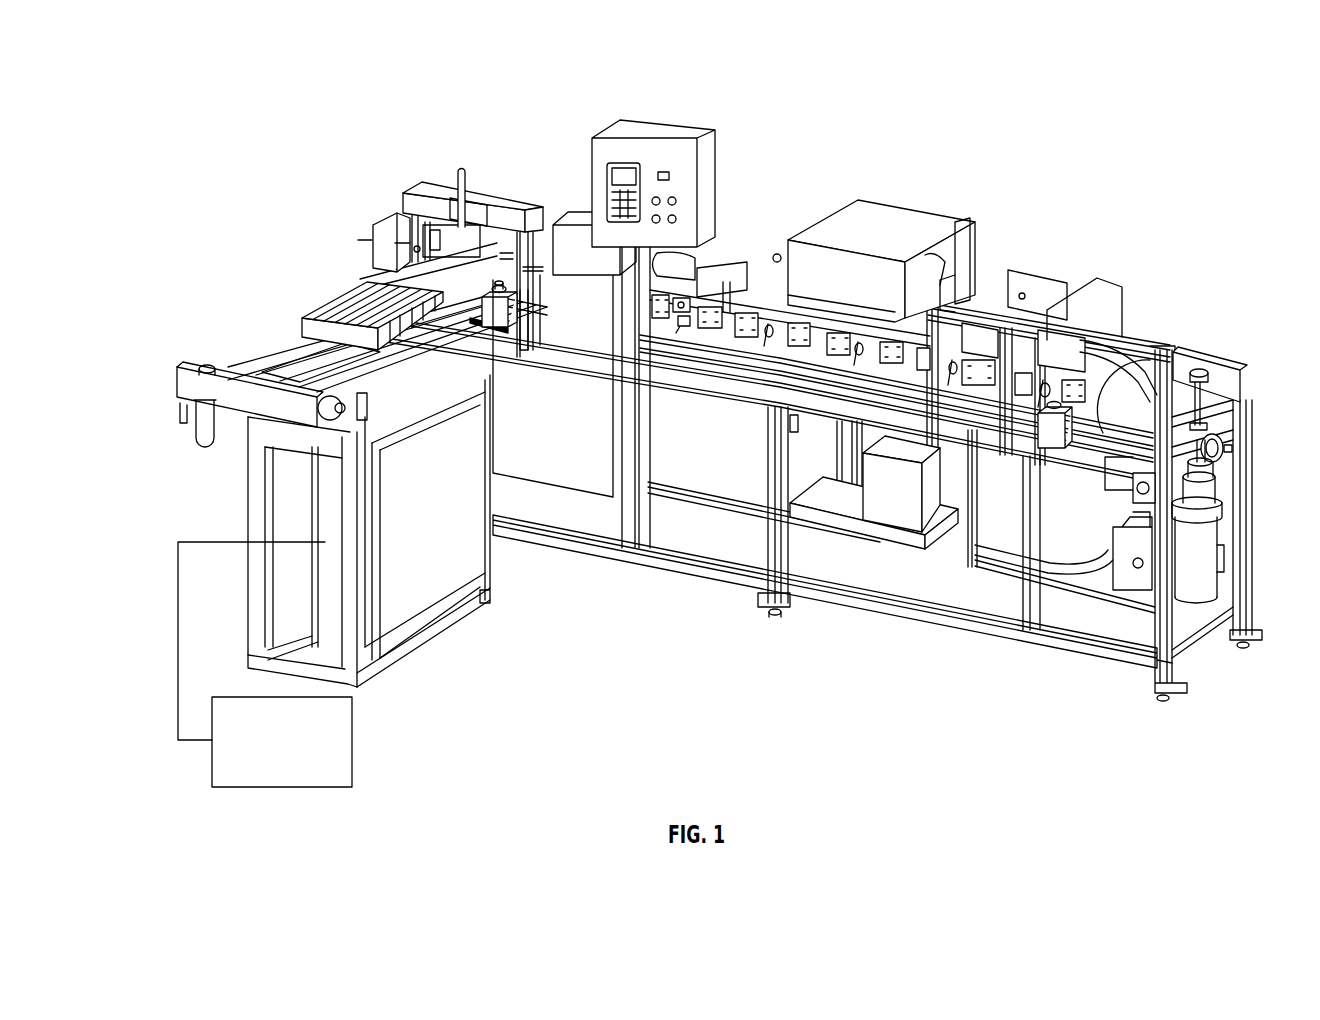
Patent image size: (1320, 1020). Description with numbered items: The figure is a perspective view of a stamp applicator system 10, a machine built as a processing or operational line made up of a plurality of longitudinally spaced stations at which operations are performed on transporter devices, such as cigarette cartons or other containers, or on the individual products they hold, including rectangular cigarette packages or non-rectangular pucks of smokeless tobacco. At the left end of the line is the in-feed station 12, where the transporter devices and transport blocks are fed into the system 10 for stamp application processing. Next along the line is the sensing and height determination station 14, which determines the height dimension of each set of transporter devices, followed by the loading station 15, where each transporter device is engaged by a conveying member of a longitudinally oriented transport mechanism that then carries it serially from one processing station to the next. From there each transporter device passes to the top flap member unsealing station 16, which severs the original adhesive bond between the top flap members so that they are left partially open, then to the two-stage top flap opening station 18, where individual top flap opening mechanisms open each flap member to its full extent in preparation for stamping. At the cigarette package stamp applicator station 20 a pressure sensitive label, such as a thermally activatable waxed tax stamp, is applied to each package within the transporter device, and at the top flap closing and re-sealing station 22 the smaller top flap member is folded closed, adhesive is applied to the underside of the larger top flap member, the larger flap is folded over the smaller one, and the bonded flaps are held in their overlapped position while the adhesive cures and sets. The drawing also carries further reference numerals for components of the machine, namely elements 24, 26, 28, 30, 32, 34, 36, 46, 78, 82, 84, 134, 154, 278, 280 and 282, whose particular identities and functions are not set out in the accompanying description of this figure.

The stamp applicator system 10 is at (632, 591).
The in-feed station 12 is at (241, 342).
The sensing and height determination station 14 is at (373, 234).
The loading station 15 is at (447, 184).
The top flap member unsealing station 16 is at (578, 210).
The two-stage top flap opening station 18 is at (742, 263).
The cigarette package stamp applicator station 20 is at (948, 220).
The top flap closing and re-sealing station 22 is at (1110, 281).
The conveyor rails 24 is at (273, 383).
The support plate 26 is at (323, 345).
The cylinder 28 is at (207, 447).
The control panel 30 is at (628, 132).
The control buttons 32 is at (673, 199).
The indicator buttons 34 is at (675, 213).
The stack of blanks 36 is at (345, 308).
The program logic controller 46 is at (352, 745).
The air tank 78 is at (1200, 582).
The valve 82 is at (1224, 452).
The housing 84 is at (1238, 388).
The clamp modules 134 is at (746, 297).
The cover 154 is at (905, 220).
The vacuum pump box 278 is at (890, 513).
The support platform 280 is at (862, 560).
The hose 282 is at (1063, 567).